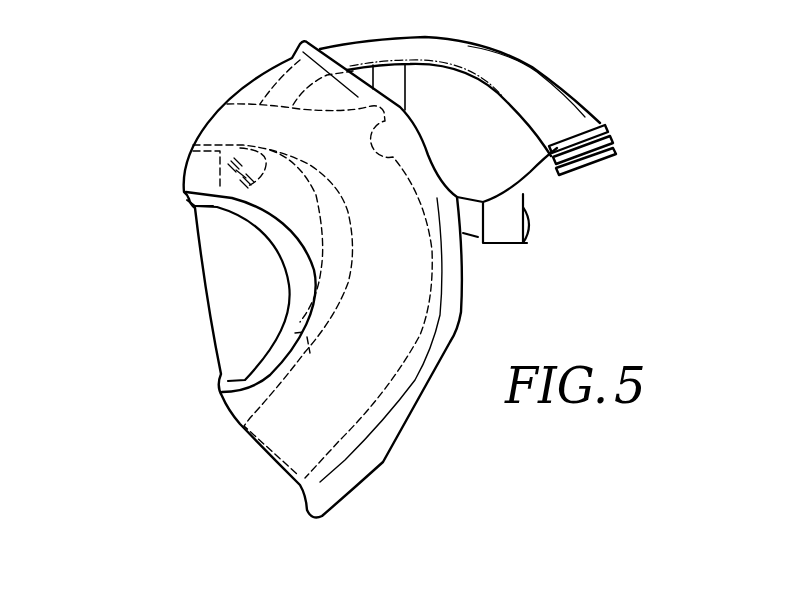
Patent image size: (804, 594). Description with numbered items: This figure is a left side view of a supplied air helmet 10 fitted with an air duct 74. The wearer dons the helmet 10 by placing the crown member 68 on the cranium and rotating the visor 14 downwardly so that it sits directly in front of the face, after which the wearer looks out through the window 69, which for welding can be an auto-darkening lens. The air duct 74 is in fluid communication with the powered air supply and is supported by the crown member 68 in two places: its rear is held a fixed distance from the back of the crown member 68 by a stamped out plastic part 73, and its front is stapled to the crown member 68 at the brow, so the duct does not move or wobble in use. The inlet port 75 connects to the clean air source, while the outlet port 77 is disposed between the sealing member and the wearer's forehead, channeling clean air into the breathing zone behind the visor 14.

The supplied air helmet 10 is at (150, 132).
The visor 14 is at (260, 60).
The crown member 68 is at (468, 234).
The window 69 is at (210, 312).
The stamped out plastic part 73 is at (515, 207).
The air duct 74 is at (553, 83).
The inlet port 75 is at (600, 158).
The outlet port 77 is at (200, 208).